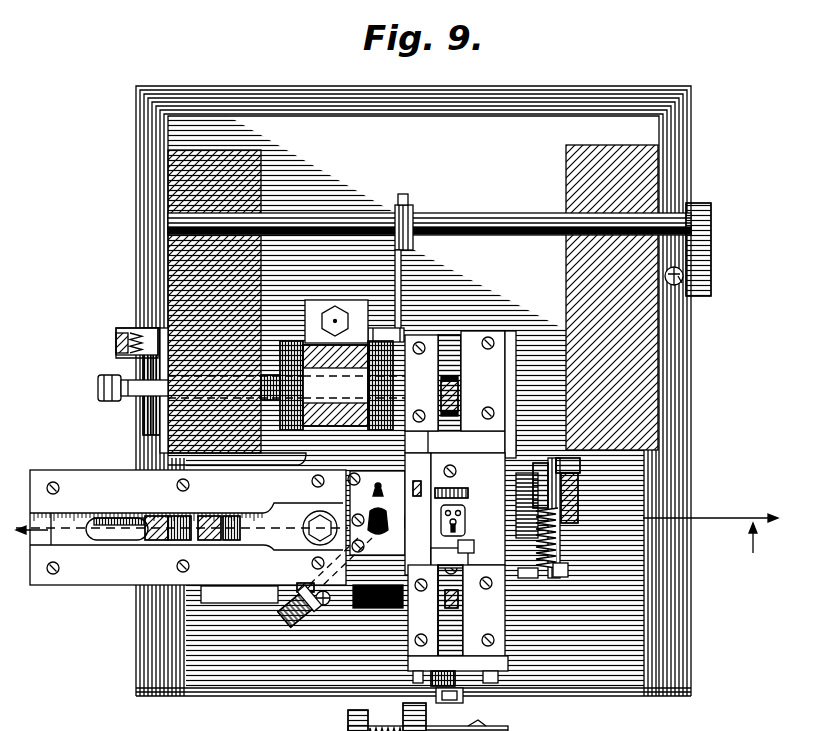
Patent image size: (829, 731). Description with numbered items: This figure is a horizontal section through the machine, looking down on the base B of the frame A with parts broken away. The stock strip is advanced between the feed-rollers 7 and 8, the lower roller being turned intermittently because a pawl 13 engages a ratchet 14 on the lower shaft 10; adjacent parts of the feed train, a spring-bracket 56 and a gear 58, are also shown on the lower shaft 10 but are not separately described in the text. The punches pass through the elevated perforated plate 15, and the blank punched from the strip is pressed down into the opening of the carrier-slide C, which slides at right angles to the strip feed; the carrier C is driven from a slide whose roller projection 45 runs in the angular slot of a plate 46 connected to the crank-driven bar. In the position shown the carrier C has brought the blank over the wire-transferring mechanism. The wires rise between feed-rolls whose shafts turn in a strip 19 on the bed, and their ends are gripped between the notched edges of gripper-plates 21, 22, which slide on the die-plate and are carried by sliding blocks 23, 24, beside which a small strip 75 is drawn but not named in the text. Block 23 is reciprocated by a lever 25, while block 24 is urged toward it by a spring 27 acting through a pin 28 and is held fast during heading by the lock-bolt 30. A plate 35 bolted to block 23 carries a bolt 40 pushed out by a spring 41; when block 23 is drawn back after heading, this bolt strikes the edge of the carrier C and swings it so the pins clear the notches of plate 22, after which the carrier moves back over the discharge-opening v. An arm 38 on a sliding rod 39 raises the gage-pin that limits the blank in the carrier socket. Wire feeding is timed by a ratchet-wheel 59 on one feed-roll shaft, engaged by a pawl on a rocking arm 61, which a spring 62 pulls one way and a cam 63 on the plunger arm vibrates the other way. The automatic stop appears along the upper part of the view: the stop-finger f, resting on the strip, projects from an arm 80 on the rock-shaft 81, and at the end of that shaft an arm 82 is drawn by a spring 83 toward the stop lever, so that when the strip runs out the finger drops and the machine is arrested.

The feed-roller 7 is at (722, 533).
The feed-roller 8 is at (386, 378).
The lower shaft 10 is at (90, 379).
The pawl 13 is at (146, 319).
The ratchet 14 is at (135, 413).
The perforated plate 15 is at (371, 469).
The strip 19 is at (507, 394).
The gripper-plate 21 is at (456, 490).
The gripper-plate 22 is at (437, 545).
The sliding block 23 is at (460, 394).
The sliding block 24 is at (452, 618).
The lever 25 is at (451, 387).
The spring 27 is at (456, 696).
The pin 28 is at (428, 717).
The lock-bolt 30 is at (423, 610).
The plate 35 is at (468, 513).
The arm 38 is at (288, 608).
The sliding rod 39 is at (295, 575).
The bolt 40 is at (459, 543).
The spring 41 is at (458, 508).
The roller projection 45 is at (186, 508).
The plate 46 is at (146, 533).
The spring bracket 56 is at (108, 330).
The gear 58 is at (293, 393).
The ratchet-wheel 59 is at (572, 510).
The rocking arm 61 is at (543, 452).
The spring 62 is at (556, 542).
The cam 63 is at (571, 487).
The strip 75 is at (409, 473).
The arm 80 is at (393, 292).
The rock-shaft 81 is at (493, 206).
The arm 82 is at (703, 240).
The spring 83 is at (703, 283).
The frame A is at (413, 299).
The base B is at (450, 167).
The carrier-slide C is at (298, 506).
The stop-finger f is at (368, 322).
The discharge-opening v is at (412, 534).